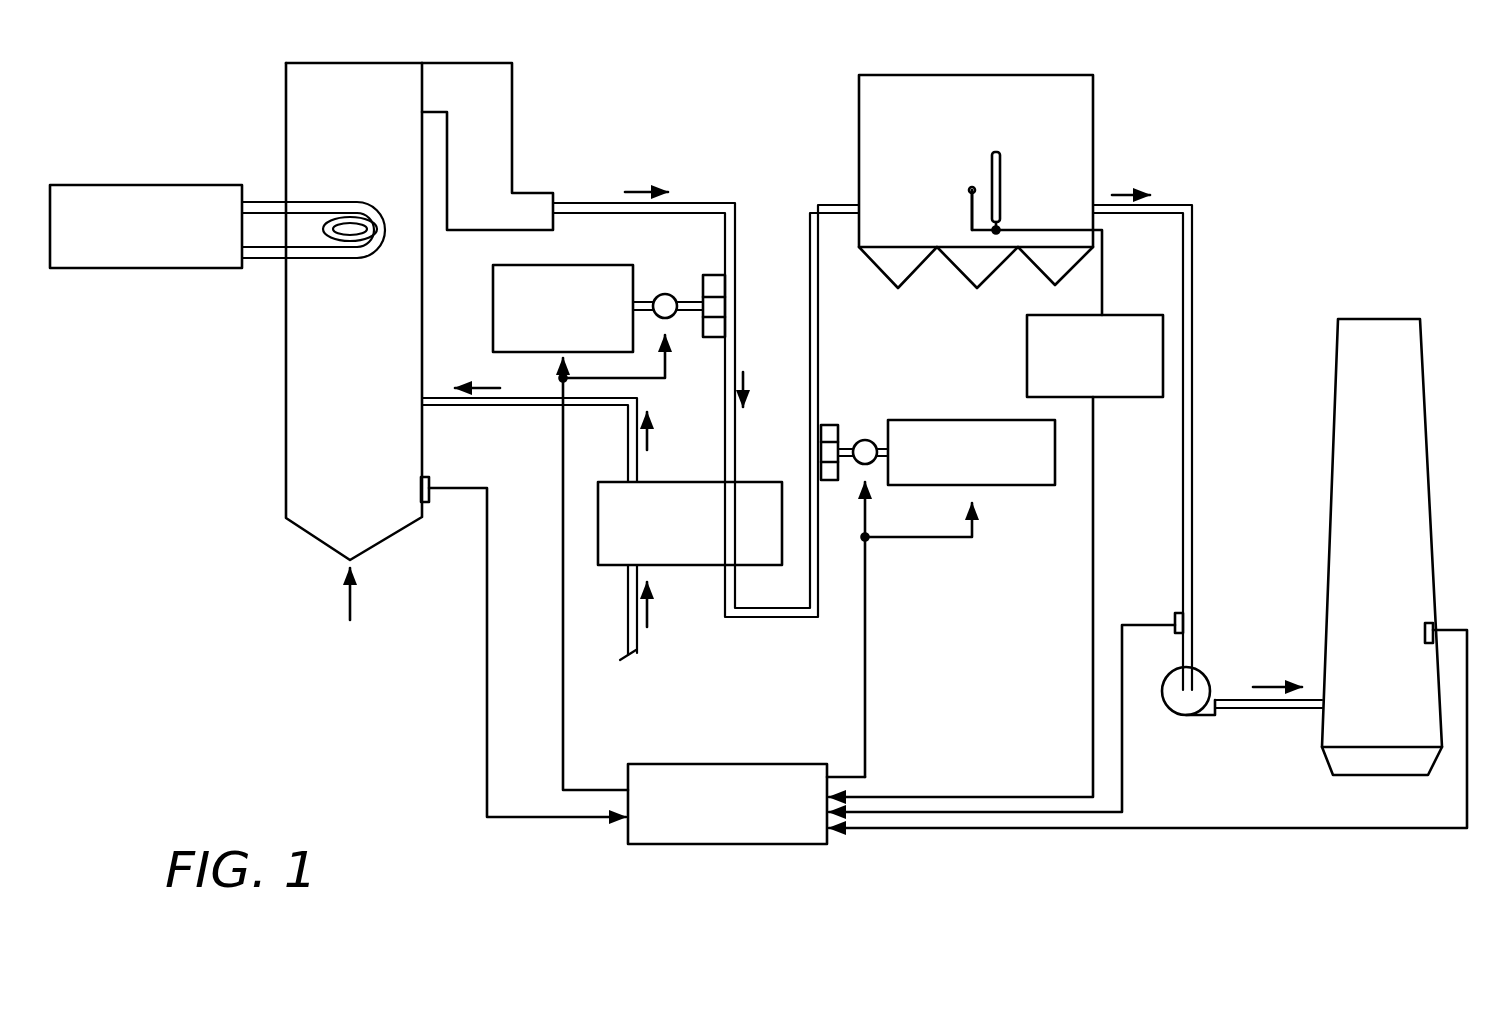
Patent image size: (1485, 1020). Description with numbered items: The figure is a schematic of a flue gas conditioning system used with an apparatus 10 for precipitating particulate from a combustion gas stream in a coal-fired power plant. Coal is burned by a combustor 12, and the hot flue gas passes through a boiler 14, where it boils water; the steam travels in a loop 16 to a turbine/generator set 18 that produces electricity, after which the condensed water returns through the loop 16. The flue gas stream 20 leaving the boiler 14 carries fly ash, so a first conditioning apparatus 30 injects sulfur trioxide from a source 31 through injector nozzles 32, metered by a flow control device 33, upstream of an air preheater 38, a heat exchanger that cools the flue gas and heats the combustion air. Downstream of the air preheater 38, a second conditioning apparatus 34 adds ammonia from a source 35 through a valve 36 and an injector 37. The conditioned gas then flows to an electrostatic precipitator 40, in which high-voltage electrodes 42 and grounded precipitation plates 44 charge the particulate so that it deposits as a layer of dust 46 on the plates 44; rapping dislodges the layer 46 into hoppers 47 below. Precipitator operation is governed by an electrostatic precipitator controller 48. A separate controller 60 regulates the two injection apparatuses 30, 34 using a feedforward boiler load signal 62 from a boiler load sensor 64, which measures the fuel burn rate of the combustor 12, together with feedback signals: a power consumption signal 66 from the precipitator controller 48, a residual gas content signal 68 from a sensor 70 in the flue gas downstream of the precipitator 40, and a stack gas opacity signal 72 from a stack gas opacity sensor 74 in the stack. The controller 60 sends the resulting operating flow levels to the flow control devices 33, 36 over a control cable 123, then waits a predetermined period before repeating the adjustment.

The apparatus for precipitating particulate 10 is at (1185, 89).
The combustor 12 is at (283, 428).
The boiler 14 is at (286, 115).
The loop 16 is at (345, 258).
The turbine/generator set 18 is at (113, 185).
The flue gas stream 20 is at (512, 112).
The first conditioning apparatus 30 is at (683, 326).
The source of sulfur trioxide 31 is at (600, 257).
The sulfur trioxide injector nozzles 32 is at (712, 275).
The flow control device 33 is at (665, 294).
The second conditioning apparatus 34 is at (995, 500).
The ammonia source 35 is at (980, 420).
The valve 36 is at (868, 440).
The injector 37 is at (828, 425).
The air preheater 38 is at (683, 568).
The electrostatic precipitator 40 is at (1055, 75).
The electrodes 42 is at (968, 189).
The precipitation plates 44 is at (1002, 170).
The layer of dust 46 is at (990, 165).
The hoppers 47 is at (992, 276).
The electrostatic precipitator controller 48 is at (1135, 315).
The controller 60 is at (740, 764).
The boiler load signal 62 is at (556, 818).
The boiler load sensor 64 is at (429, 478).
The power consumption signal 66 is at (965, 797).
The residual gas content signal 68 is at (1122, 797).
The sensor 70 is at (1175, 620).
The stack gas opacity signal 72 is at (1140, 830).
The stack gas opacity sensor 74 is at (1425, 636).
The control cable 123 is at (593, 790).